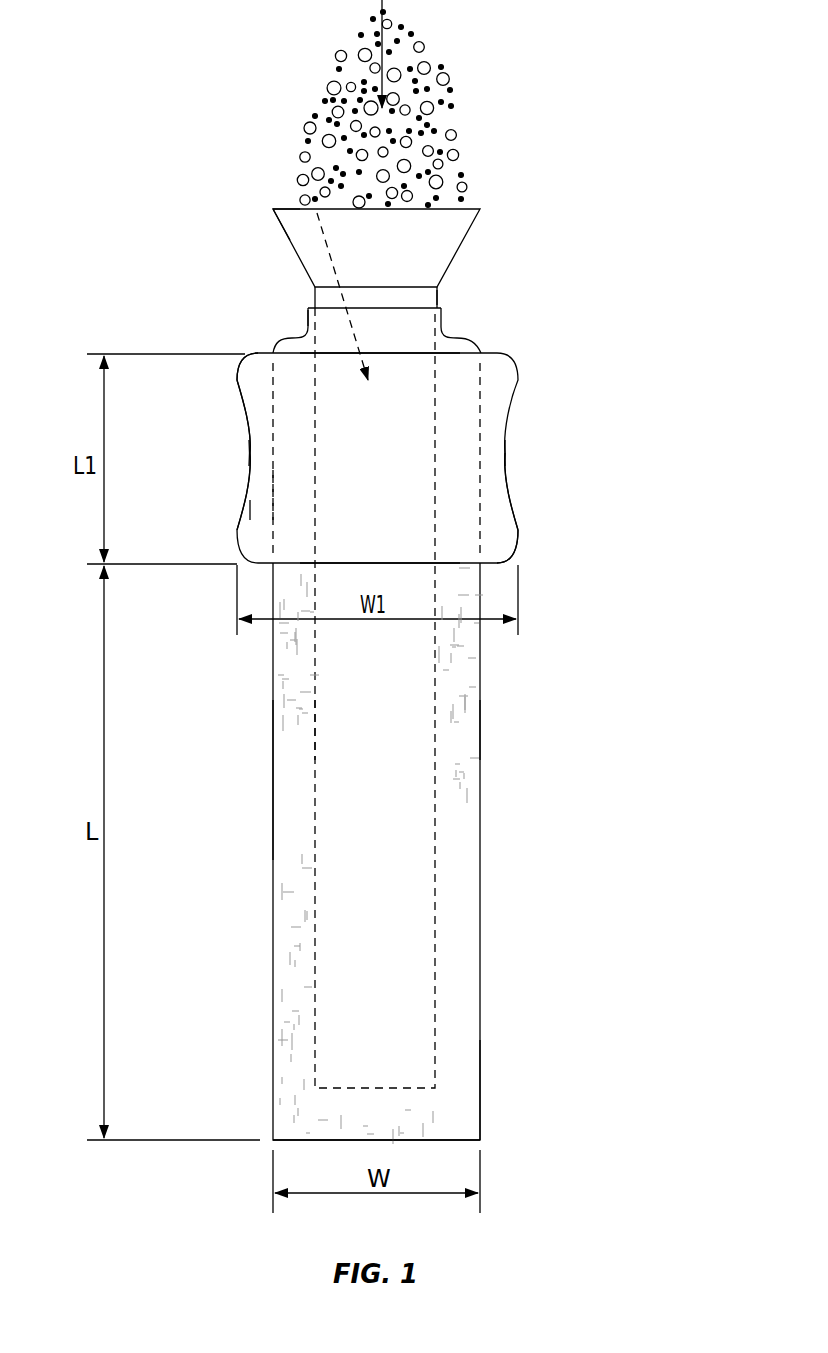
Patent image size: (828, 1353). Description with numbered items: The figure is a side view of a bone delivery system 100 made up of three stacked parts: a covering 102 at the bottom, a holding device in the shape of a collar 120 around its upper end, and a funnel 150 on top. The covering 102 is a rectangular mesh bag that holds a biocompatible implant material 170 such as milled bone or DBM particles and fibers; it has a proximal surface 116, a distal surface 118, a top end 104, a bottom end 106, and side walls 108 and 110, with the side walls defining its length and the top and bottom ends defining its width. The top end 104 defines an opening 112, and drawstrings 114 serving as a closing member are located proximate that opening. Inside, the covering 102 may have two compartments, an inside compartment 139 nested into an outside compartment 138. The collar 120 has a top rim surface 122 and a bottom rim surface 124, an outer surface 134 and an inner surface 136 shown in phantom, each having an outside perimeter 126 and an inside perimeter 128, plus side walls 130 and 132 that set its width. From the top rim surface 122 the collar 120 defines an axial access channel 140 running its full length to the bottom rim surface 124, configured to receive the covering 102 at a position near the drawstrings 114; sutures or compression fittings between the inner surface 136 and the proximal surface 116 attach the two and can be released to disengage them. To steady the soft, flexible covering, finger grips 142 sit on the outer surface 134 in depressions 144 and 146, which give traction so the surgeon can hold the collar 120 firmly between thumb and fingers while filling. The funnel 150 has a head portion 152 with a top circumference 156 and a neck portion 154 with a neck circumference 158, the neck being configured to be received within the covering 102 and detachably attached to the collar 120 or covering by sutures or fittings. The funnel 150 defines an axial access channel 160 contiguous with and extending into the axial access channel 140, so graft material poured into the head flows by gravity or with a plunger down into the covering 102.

The delivery system 100 is at (592, 730).
The covering 102 is at (481, 780).
The top end 104 is at (463, 333).
The bottom end 106 is at (445, 1140).
The side wall 108 is at (272, 782).
The side wall 110 is at (481, 1085).
The opening 112 is at (441, 292).
The drawstrings 114 is at (305, 332).
The proximal surface 116 is at (464, 692).
The distal surface 118 is at (312, 737).
The collar 120 is at (520, 411).
The top rim surface 122 is at (488, 352).
The bottom rim surface 124 is at (488, 565).
The outside perimeter 126 is at (228, 385).
The inside perimeter 128 is at (274, 384).
The side wall 130 is at (518, 533).
The side wall 132 is at (232, 533).
The outer surface 134 is at (255, 515).
The inner surface 136 is at (268, 508).
The outside compartment 138 is at (457, 968).
The inside compartment 139 is at (411, 958).
The axial access channel 140 is at (305, 538).
The finger grips 142 is at (506, 452).
The depression 144 is at (506, 470).
The depression 146 is at (243, 453).
The funnel 150 is at (468, 196).
The head portion 152 is at (273, 211).
The neck portion 154 is at (313, 290).
The top circumference 156 is at (273, 208).
The neck circumference 158 is at (313, 300).
The axial access channel 160 is at (317, 213).
The biocompatible implant material 170 is at (452, 102).